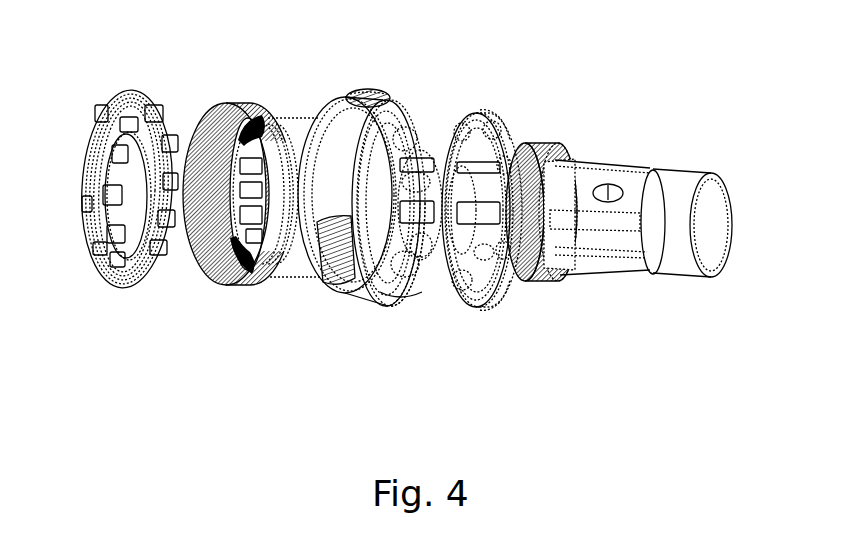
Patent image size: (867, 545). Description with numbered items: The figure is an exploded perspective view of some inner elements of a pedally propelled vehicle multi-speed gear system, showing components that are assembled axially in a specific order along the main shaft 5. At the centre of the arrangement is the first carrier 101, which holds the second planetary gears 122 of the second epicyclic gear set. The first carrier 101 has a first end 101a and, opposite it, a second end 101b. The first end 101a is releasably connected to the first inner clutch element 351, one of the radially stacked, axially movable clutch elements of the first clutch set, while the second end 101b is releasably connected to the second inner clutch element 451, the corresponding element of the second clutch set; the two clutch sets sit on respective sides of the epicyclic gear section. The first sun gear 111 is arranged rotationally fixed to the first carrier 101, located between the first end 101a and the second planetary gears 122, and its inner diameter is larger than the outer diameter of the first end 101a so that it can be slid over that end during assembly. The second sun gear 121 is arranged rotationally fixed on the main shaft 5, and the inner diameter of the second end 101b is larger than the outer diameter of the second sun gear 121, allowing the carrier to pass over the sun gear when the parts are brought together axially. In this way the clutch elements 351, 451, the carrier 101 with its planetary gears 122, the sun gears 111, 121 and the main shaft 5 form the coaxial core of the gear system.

The first inner clutch element 351 is at (148, 92).
The first sun gear 111 is at (243, 107).
The first carrier 101 is at (350, 123).
The first end 101a is at (277, 277).
The second end 101b is at (420, 287).
The second planetary gears 122 is at (380, 93).
The second inner clutch element 451 is at (477, 112).
The second sun gear 121 is at (563, 150).
The main shaft 5 is at (680, 172).